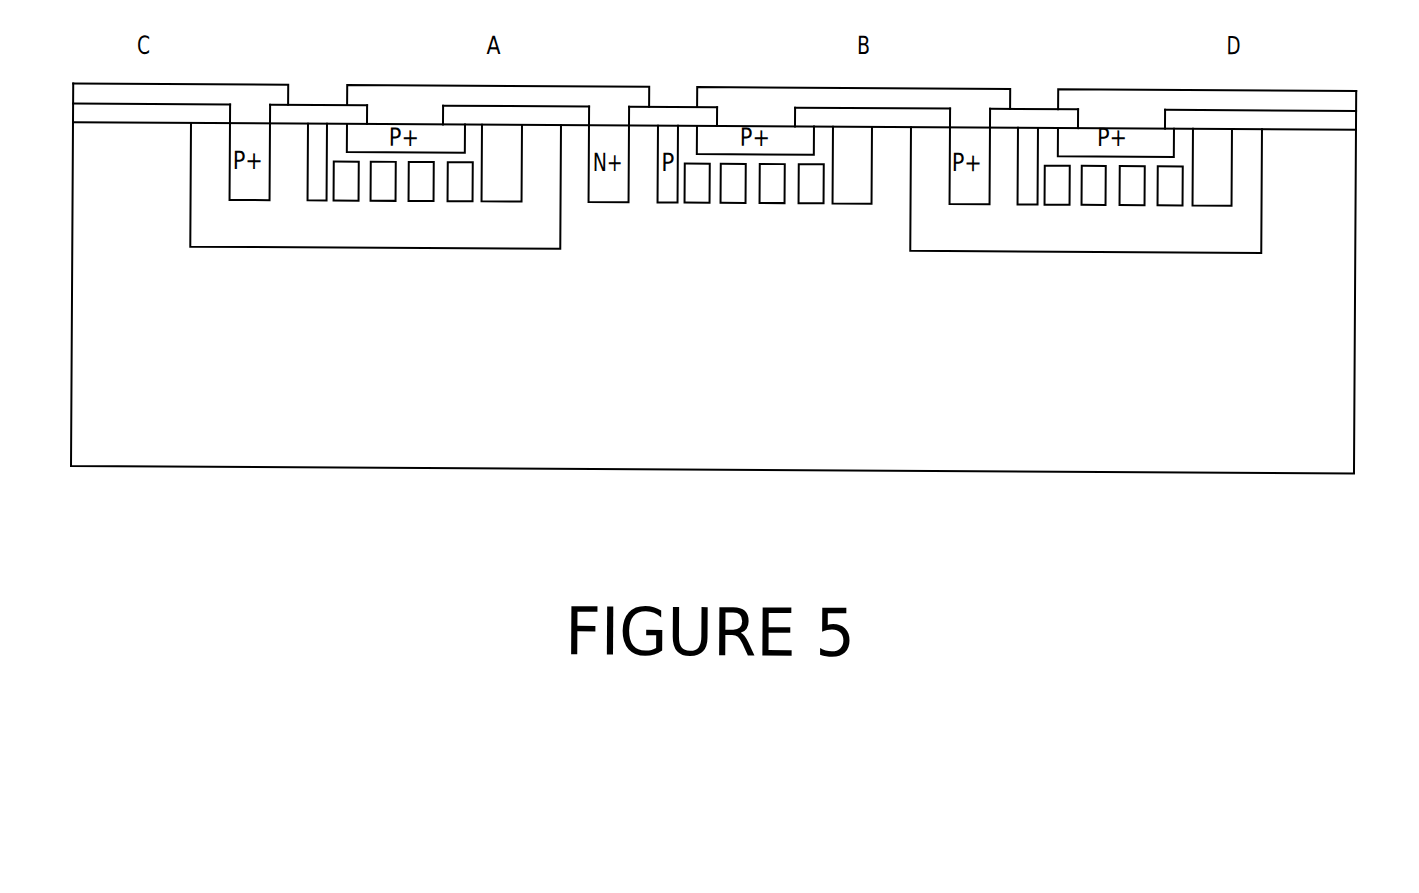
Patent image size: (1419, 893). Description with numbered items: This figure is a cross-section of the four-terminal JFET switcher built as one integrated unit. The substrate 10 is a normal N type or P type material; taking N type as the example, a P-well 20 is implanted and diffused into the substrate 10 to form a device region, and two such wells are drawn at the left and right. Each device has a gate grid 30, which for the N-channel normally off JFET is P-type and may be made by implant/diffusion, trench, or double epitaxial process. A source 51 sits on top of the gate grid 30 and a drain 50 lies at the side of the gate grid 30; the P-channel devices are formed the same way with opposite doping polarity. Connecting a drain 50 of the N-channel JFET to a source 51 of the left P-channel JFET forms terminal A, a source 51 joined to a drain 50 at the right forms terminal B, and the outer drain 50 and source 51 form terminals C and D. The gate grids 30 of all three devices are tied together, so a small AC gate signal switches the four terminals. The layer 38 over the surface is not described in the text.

The substrate 10 is at (713, 279).
The P-well 20 is at (726, 188).
The gate grid 30 is at (857, 165).
The insulating layer 38 is at (1357, 112).
The drain 50 is at (271, 84).
The source 51 is at (367, 84).